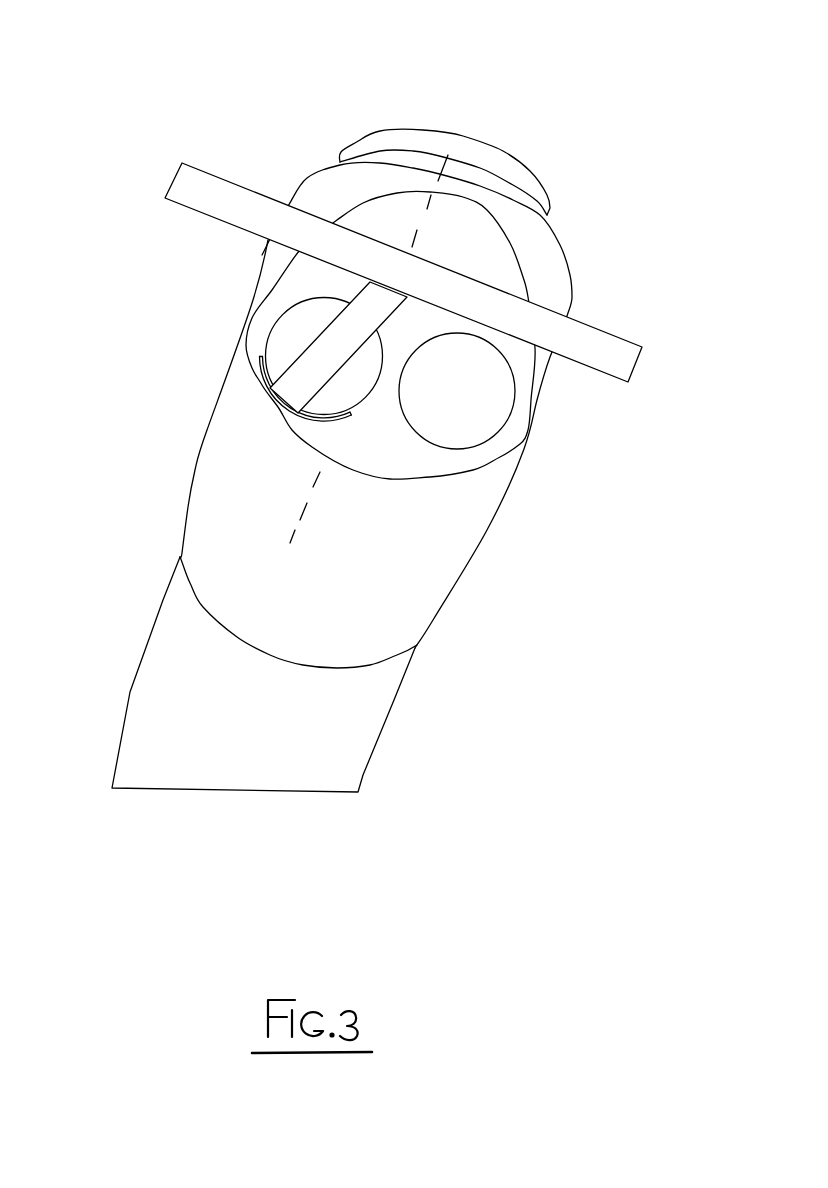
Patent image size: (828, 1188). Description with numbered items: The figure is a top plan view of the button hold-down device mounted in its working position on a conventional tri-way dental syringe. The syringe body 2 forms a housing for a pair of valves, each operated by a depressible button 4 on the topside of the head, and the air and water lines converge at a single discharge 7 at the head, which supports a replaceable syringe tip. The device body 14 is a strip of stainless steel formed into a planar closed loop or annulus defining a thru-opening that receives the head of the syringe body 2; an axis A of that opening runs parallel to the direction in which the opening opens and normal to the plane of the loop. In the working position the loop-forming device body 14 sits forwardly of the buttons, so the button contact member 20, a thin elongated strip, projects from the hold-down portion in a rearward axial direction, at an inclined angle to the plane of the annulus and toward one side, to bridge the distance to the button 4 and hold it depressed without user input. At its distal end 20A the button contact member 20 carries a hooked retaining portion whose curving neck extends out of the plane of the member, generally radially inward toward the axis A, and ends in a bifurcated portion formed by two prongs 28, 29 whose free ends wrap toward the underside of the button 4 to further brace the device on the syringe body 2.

The syringe body 2 is at (524, 449).
The depressible button 4 is at (272, 328).
The discharge 7 is at (420, 124).
The device body 14 is at (641, 363).
The button contact member 20 is at (315, 337).
The distal end 20A is at (321, 400).
The prong 28 is at (263, 375).
The prong 29 is at (322, 420).
The axis A is at (432, 197).